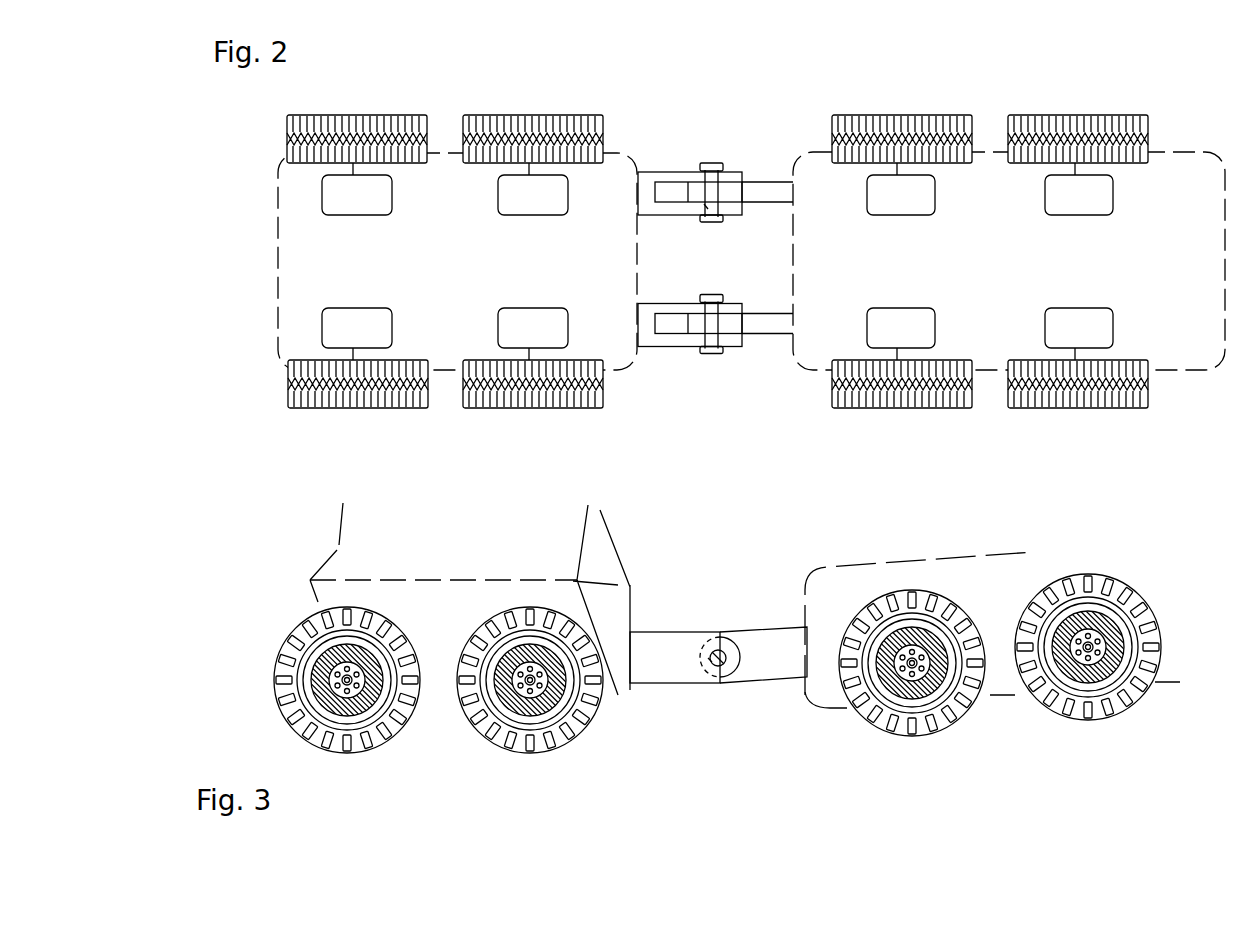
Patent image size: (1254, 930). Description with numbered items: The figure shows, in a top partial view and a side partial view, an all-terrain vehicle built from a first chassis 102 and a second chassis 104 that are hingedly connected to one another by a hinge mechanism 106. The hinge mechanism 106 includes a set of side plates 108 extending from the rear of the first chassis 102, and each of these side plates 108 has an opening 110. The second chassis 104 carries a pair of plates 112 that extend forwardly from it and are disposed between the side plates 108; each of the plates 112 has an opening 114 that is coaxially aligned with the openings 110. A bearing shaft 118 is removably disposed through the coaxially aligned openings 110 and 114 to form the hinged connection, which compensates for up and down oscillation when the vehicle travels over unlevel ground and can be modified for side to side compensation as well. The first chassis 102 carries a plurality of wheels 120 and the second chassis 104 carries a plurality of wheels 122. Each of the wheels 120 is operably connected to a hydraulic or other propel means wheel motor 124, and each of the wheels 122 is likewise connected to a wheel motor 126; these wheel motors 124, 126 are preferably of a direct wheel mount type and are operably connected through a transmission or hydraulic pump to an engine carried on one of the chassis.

In FIG. 2, the first chassis 102 is at (300, 247).
In FIG. 3, the first chassis 102 is at (337, 551).
In FIG. 2, the second chassis 104 is at (1185, 165).
In FIG. 3, the second chassis 104 is at (980, 565).
In FIG. 2, the hinge mechanism 106 is at (678, 136).
In FIG. 3, the hinge mechanism 106 is at (744, 693).
In FIG. 2, the side plates 108 is at (642, 172).
In FIG. 3, the side plates 108 is at (665, 645).
In FIG. 2, the opening 110 is at (706, 207).
In FIG. 3, the opening 110 is at (710, 660).
In FIG. 2, the plates 112 is at (770, 172).
In FIG. 3, the plates 112 is at (778, 637).
In FIG. 2, the opening 114 is at (717, 197).
In FIG. 3, the opening 114 is at (747, 647).
In FIG. 2, the bearing shaft 118 is at (710, 163).
In FIG. 3, the bearing shaft 118 is at (705, 647).
In FIG. 2, the wheels 120 is at (474, 115).
In FIG. 3, the wheels 120 is at (470, 735).
In FIG. 2, the wheels 122 is at (950, 115).
In FIG. 3, the wheels 122 is at (950, 723).
In FIG. 2, the wheel motor 124 is at (520, 207).
In FIG. 2, the wheel motor 126 is at (1060, 207).